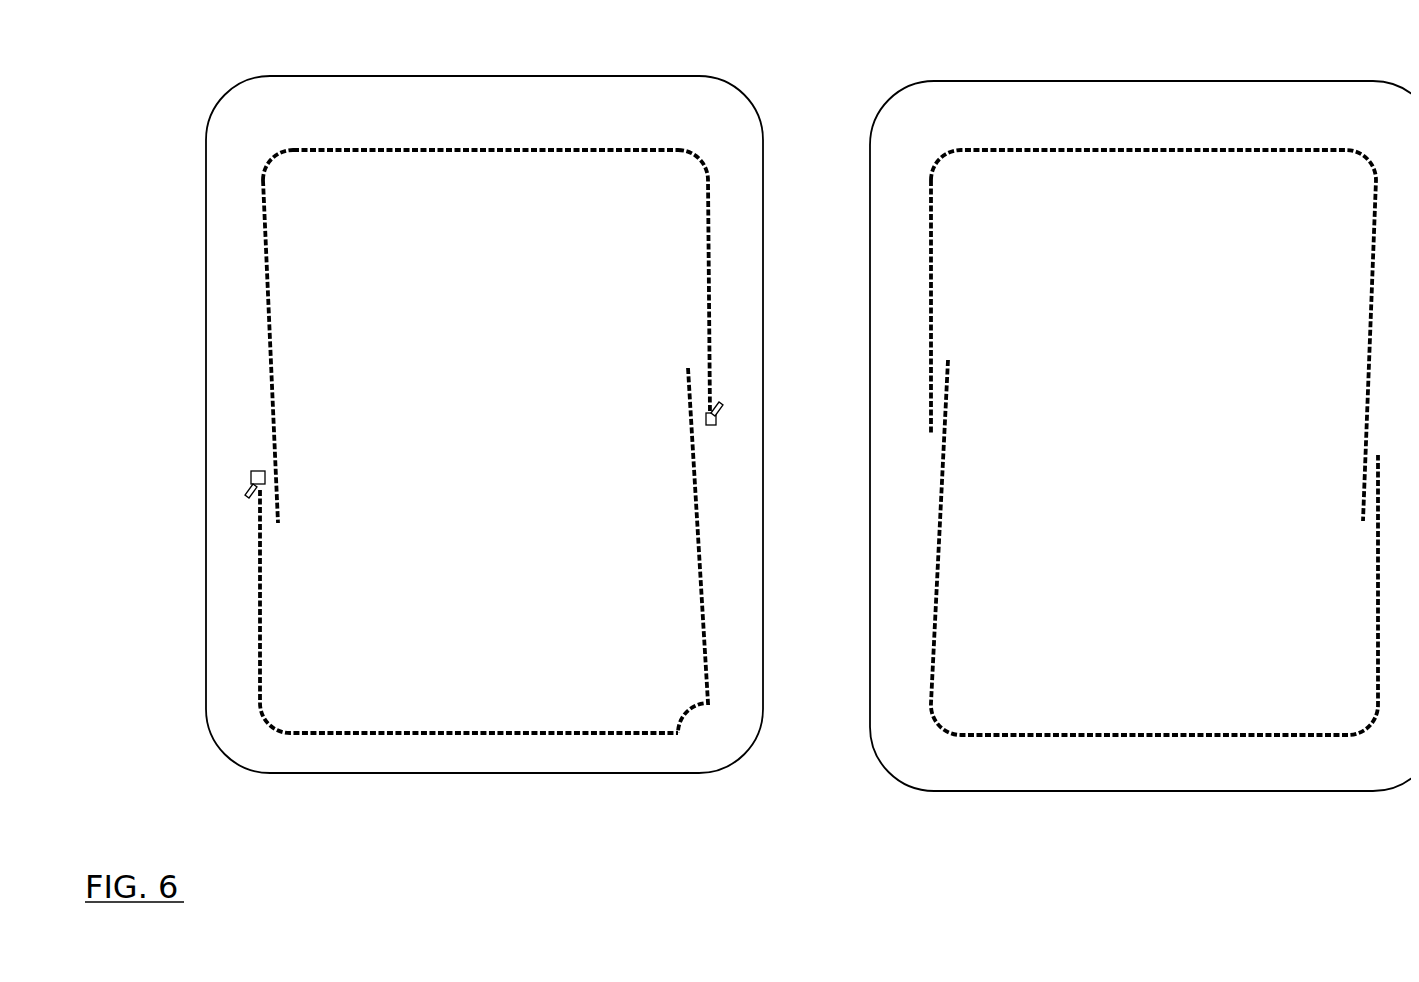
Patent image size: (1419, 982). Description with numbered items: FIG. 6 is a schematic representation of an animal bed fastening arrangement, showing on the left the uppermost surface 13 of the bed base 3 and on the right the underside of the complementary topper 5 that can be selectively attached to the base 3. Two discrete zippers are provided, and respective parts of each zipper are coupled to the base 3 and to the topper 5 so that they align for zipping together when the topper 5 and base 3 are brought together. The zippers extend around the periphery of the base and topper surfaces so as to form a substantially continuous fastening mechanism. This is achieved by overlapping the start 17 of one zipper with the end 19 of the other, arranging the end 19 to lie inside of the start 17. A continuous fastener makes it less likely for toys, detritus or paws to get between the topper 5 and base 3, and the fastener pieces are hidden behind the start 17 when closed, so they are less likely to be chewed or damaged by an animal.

The base 3 is at (185, 375).
The topper 5 is at (838, 726).
The uppermost surface 13 is at (638, 634).
The start of zipper 17 is at (745, 413).
The end of zipper 19 is at (656, 355).